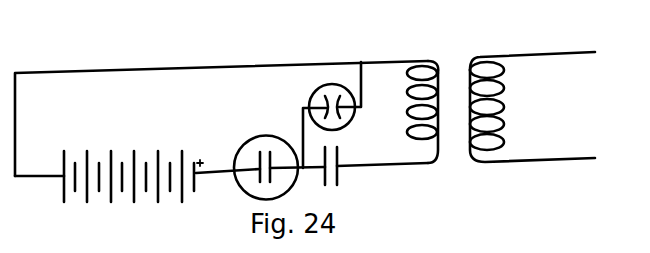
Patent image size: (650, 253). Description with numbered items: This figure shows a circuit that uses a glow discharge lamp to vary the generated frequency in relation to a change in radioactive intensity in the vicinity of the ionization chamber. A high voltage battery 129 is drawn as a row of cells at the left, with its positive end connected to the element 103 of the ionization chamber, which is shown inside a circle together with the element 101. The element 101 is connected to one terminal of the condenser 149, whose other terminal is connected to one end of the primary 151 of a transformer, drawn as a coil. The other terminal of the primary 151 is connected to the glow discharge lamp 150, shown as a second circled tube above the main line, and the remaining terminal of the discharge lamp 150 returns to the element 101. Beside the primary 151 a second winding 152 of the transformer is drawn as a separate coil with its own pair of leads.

The battery 129 is at (129, 163).
The element of the ionization chamber 103 is at (258, 159).
The element of the ionization chamber 101 is at (272, 160).
The glow discharge lamp 150 is at (321, 98).
The condenser 149 is at (339, 173).
The primary of a transformer 151 is at (413, 97).
The secondary coil 152 is at (532, 97).